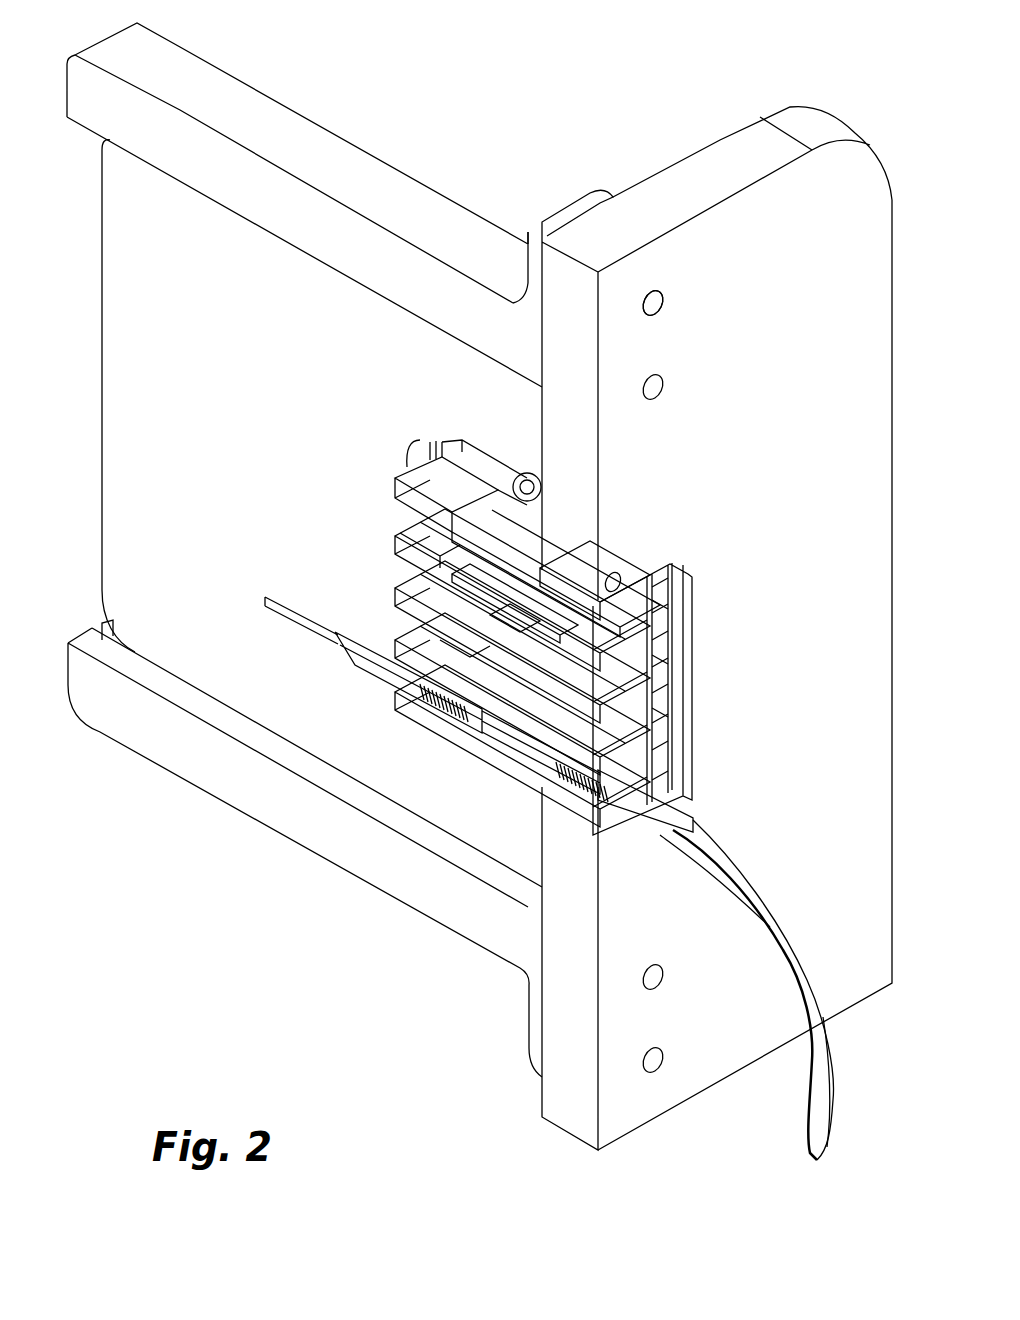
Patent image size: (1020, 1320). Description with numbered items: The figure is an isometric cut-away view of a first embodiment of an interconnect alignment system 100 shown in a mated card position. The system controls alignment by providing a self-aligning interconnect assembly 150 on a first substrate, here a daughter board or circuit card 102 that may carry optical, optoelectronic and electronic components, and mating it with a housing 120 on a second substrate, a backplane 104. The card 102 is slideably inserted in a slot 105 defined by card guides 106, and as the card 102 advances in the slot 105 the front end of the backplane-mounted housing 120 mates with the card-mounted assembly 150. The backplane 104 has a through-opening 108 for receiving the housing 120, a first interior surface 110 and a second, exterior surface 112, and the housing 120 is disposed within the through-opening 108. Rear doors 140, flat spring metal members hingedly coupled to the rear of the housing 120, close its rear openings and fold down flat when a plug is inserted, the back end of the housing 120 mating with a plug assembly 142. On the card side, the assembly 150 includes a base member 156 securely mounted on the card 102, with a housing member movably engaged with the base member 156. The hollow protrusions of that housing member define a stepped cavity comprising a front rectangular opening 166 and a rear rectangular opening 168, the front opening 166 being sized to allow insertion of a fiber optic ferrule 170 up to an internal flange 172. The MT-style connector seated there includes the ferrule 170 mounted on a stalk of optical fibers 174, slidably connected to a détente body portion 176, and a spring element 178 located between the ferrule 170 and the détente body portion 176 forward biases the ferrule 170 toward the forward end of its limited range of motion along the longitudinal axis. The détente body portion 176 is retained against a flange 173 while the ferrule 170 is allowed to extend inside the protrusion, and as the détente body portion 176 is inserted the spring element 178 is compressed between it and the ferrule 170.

The interconnect alignment system 100 is at (215, 917).
The circuit card 102 is at (213, 317).
The backplane 104 is at (807, 396).
The slot 105 is at (107, 633).
The card guides 106 is at (197, 68).
The through-opening 108 is at (652, 585).
The first interior surface 110 is at (537, 282).
The second, exterior surface 112 is at (602, 340).
The housing 120 is at (695, 648).
The rear doors 140 is at (452, 574).
The plug assembly 142 is at (702, 812).
The self-aligning interconnect assembly 150 is at (402, 470).
The base member 156 is at (463, 445).
The front rectangular opening 166 is at (392, 563).
The rear rectangular opening 168 is at (505, 627).
The fiber optic ferrule 170 is at (497, 730).
The internal flange 172 is at (400, 533).
The flange 173 is at (440, 640).
The stalk of optical fibers 174 is at (287, 615).
The détente body portion 176 is at (373, 680).
The spring element 178 is at (437, 710).